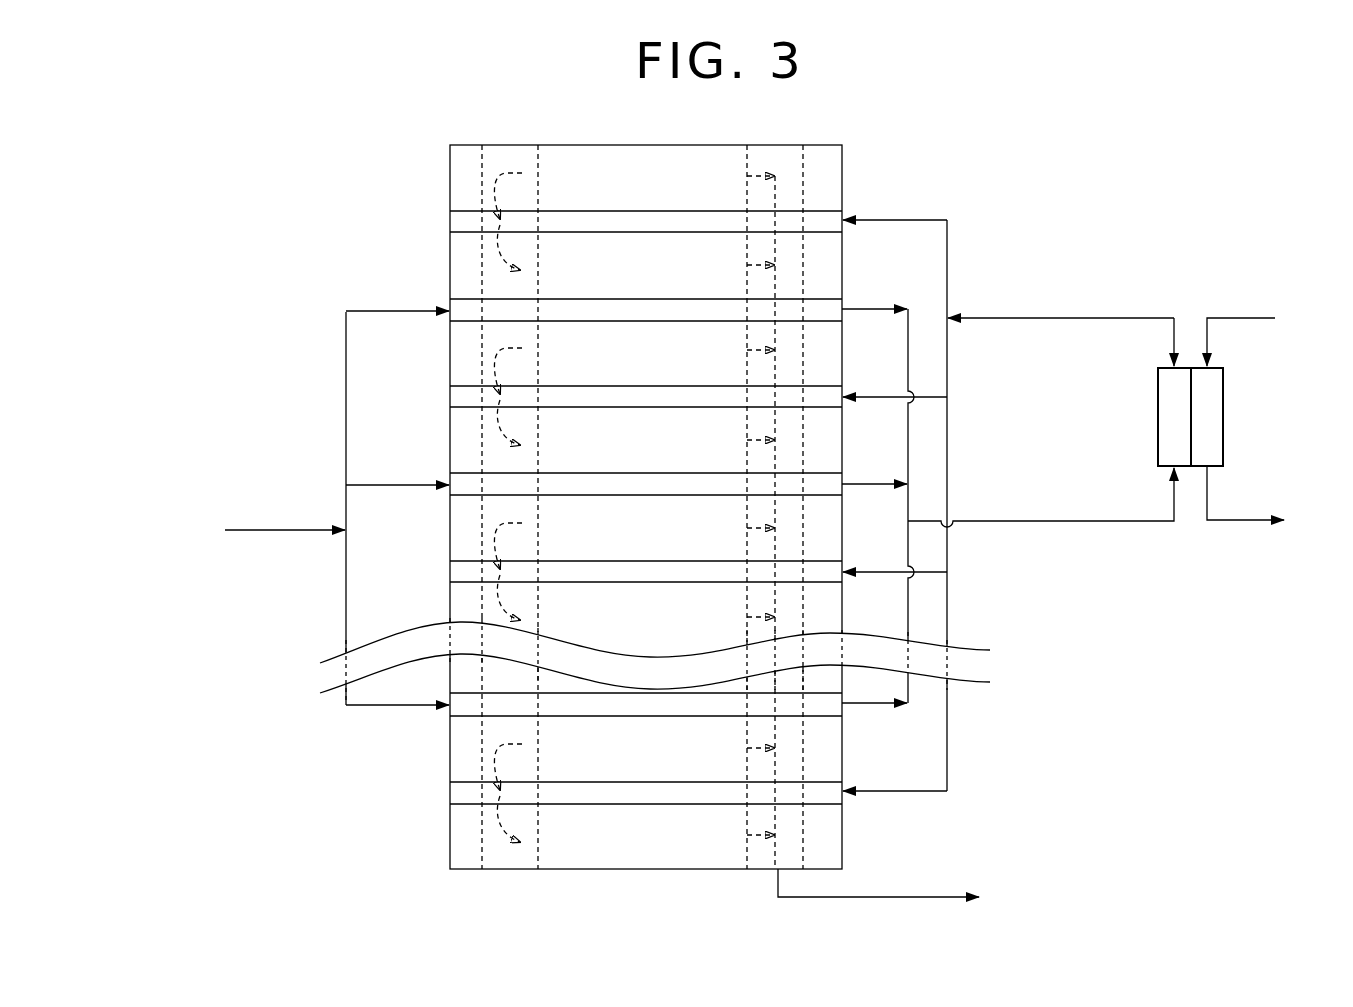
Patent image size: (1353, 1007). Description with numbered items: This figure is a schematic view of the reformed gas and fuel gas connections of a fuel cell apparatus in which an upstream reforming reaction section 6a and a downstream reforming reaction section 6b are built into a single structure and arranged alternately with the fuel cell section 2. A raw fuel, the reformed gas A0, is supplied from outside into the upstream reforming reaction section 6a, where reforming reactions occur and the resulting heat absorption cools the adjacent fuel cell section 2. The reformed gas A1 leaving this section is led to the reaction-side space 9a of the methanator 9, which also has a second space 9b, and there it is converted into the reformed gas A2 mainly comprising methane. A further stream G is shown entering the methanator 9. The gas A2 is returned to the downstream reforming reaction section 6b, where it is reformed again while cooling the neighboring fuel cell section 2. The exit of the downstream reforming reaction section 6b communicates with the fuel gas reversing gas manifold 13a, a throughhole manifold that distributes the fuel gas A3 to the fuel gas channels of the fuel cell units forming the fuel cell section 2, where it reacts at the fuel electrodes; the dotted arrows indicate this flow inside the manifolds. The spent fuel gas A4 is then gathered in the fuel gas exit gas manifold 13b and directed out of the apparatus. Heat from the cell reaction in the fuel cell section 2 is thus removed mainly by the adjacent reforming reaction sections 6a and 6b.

The fuel cell section 2 is at (620, 160).
The upstream reforming reaction section 6a is at (825, 298).
The downstream reforming reaction section 6b is at (825, 210).
The fuel gas reversing gas manifold 13a is at (490, 160).
The fuel gas exit gas manifold 13b is at (790, 155).
The methanator 9 is at (1195, 417).
The reaction-side space 9a is at (1157, 424).
The second side space of the methanator 9b is at (1213, 437).
The reformed gas A0 is at (258, 528).
The reformed gas A1 is at (1062, 524).
The reformed gas A2 is at (1043, 318).
The fuel gas A3 is at (494, 185).
The fuel gas A4 is at (897, 895).
The gas flow G is at (1251, 334).